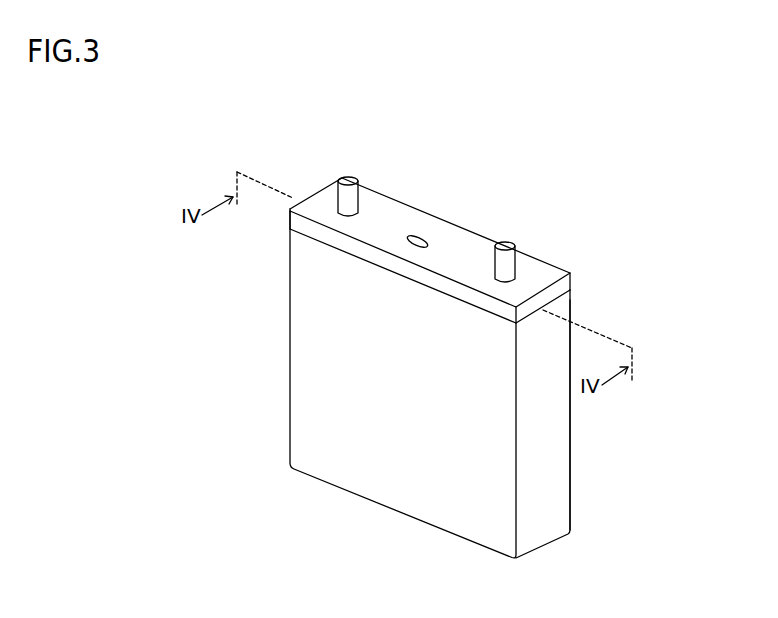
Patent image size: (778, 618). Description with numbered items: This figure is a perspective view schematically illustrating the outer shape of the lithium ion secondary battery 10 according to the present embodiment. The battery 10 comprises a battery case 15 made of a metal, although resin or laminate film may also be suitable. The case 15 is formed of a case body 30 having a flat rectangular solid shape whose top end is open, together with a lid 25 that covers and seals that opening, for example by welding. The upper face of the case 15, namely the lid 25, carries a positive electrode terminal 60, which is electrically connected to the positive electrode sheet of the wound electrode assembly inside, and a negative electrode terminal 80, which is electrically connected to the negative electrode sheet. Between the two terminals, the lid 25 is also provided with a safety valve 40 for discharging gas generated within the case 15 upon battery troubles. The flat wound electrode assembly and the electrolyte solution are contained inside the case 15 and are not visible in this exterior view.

The lithium ion secondary battery 10 is at (737, 90).
The battery case 15 is at (403, 484).
The lid 25 is at (570, 277).
The case body 30 is at (562, 497).
The safety valve 40 is at (413, 234).
The positive electrode terminal 60 is at (347, 178).
The negative electrode terminal 80 is at (502, 243).